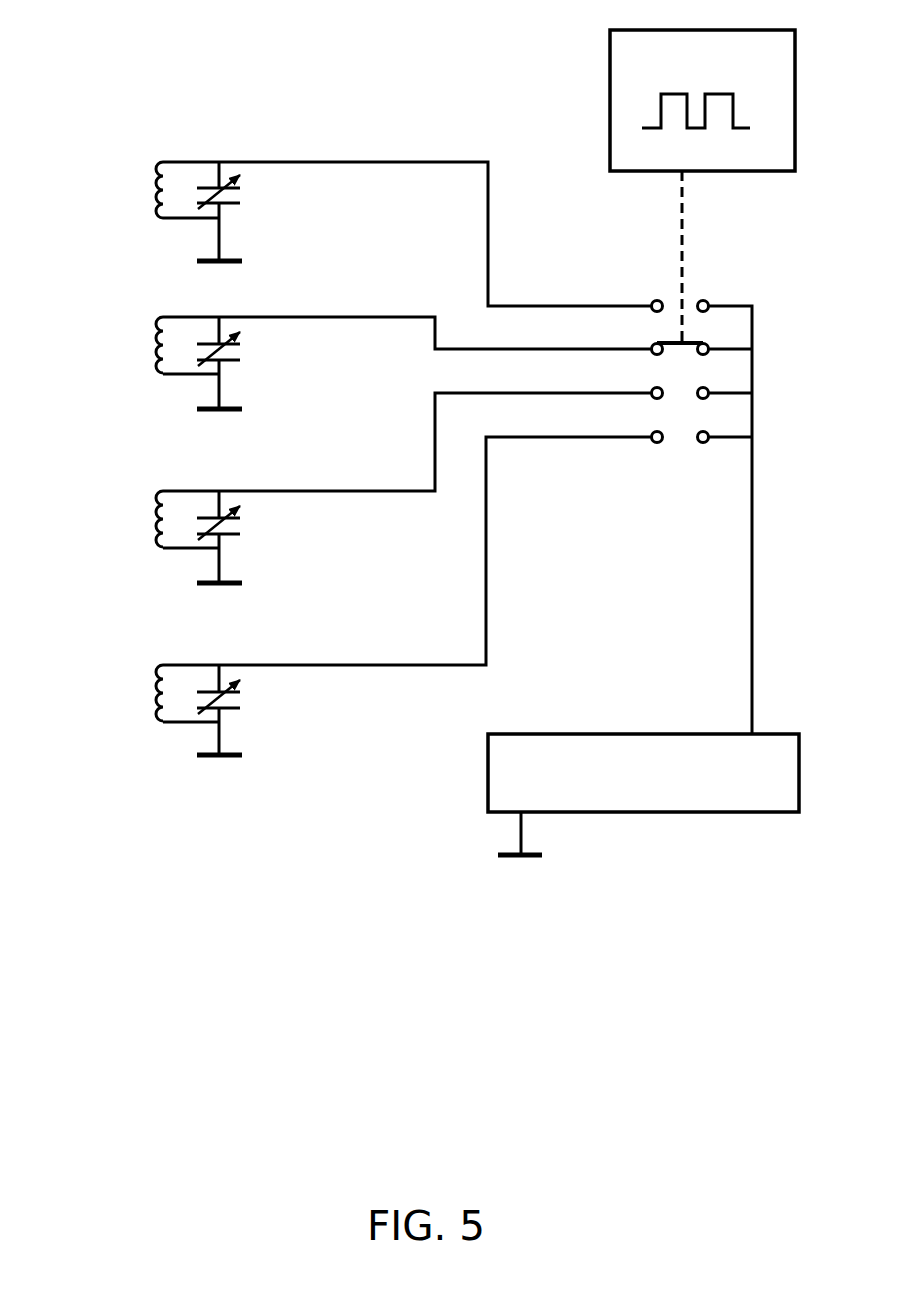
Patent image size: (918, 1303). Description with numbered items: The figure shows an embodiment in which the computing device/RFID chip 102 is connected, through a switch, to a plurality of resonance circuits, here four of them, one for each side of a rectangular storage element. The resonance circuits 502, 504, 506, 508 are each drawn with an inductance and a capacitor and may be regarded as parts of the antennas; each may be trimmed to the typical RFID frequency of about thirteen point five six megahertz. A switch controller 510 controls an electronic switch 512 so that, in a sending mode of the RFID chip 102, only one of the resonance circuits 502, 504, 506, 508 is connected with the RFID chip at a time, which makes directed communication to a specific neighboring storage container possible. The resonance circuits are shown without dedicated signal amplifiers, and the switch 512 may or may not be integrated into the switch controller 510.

The computing device/RFID chip 102 is at (580, 790).
The resonance circuit 502 is at (150, 183).
The resonance circuit 504 is at (150, 340).
The resonance circuit 506 is at (150, 514).
The resonance circuit 508 is at (150, 688).
The switch controller 510 is at (683, 71).
The electronic switch 512 is at (658, 463).